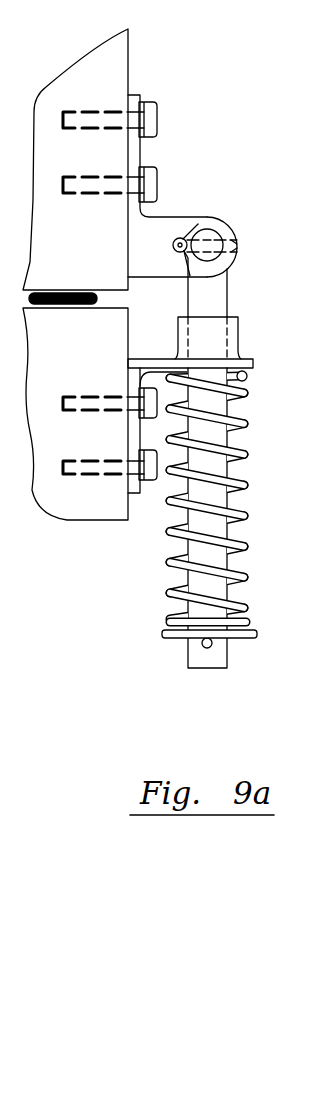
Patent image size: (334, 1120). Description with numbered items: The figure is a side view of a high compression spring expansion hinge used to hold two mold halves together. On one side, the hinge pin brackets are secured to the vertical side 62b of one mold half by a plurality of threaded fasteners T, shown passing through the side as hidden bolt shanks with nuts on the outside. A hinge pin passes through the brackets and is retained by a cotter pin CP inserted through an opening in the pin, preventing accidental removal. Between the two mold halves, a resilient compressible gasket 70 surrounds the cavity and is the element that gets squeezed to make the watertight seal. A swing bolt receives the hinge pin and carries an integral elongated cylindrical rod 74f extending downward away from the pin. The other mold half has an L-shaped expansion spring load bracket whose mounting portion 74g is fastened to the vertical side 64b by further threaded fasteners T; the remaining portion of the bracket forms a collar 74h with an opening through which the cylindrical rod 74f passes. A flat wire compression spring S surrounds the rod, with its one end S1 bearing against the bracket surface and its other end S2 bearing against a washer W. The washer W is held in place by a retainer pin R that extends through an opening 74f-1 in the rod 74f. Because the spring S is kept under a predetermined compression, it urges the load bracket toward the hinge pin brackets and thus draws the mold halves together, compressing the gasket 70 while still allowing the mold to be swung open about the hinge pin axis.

The vertical side of mold half 62b is at (107, 75).
The vertical side of mold half 64b is at (90, 515).
The resilient compressible gasket 70 is at (100, 298).
The threaded fasteners T is at (157, 185).
The cotter pin CP is at (172, 245).
The mounting portion 74g is at (132, 437).
The collar 74h is at (240, 332).
The cylindrical rod 74f is at (236, 482).
The opening 74f-1 is at (262, 674).
The retainer pin R is at (207, 648).
The flat wire compression spring S is at (240, 496).
The spring end S1 is at (247, 379).
The spring end S2 is at (250, 621).
The washer W is at (254, 632).